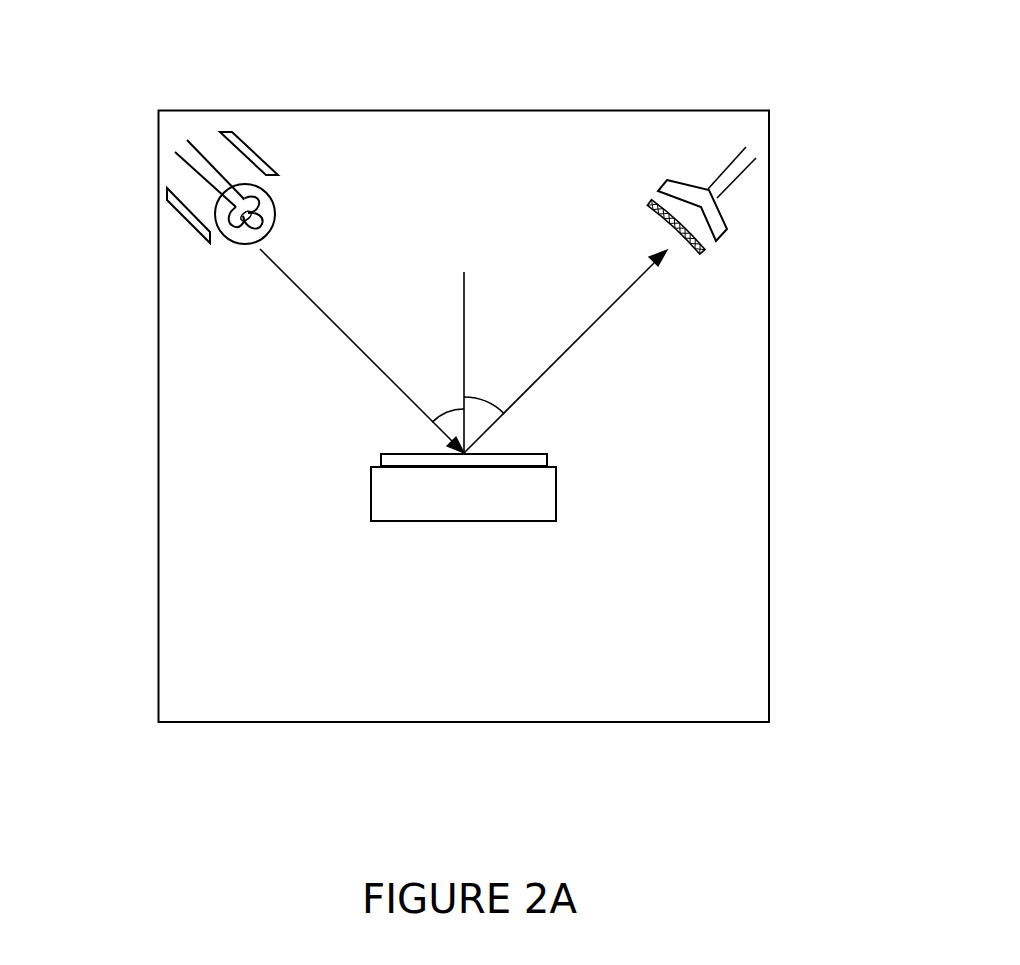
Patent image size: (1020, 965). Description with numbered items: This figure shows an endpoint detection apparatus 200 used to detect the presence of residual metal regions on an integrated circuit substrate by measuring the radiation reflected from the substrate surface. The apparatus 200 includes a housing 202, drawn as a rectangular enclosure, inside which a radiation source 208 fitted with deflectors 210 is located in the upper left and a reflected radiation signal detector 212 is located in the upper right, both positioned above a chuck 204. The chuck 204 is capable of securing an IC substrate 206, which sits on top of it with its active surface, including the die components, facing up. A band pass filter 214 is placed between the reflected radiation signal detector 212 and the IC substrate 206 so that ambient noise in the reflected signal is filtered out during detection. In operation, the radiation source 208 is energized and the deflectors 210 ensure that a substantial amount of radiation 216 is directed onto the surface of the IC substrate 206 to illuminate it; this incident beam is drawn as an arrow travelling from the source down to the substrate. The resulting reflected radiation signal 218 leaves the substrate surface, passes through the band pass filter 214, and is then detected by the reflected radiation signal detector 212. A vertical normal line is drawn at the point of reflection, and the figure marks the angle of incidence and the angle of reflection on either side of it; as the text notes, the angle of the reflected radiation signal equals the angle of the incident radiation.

The endpoint detection apparatus 200 is at (245, 93).
The housing 202 is at (769, 403).
The chuck 204 is at (517, 502).
The IC substrate 206 is at (395, 459).
The radiation source 208 is at (277, 223).
The deflectors 210 is at (183, 217).
The reflected radiation signal detector 212 is at (718, 222).
The band pass filter 214 is at (650, 203).
The radiation 216 is at (315, 302).
The reflected radiation signal 218 is at (560, 358).